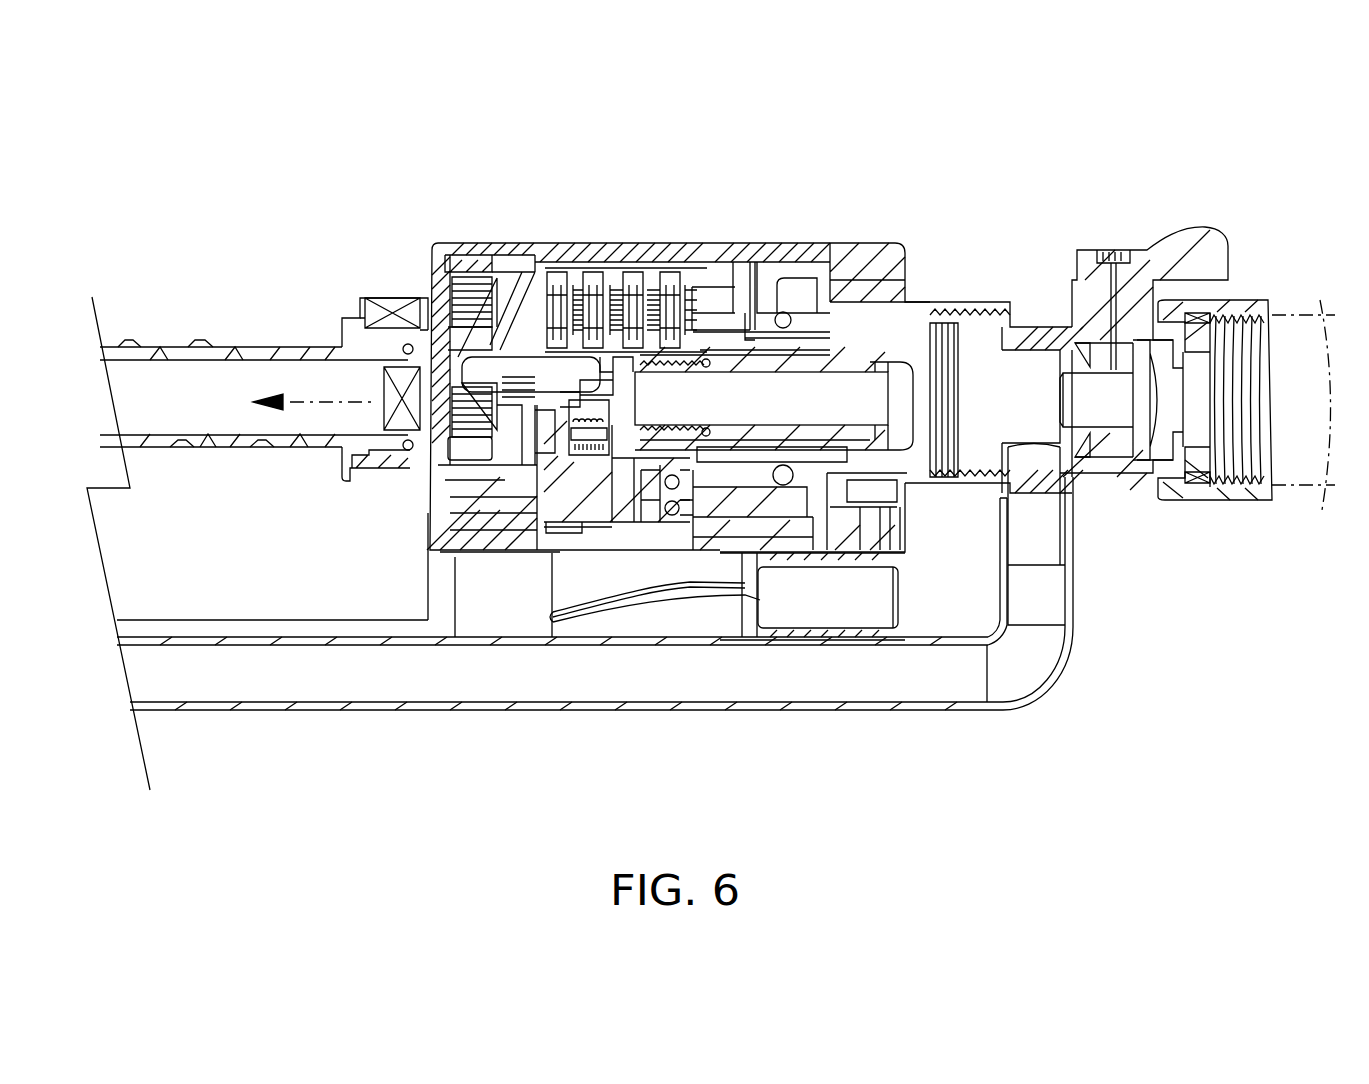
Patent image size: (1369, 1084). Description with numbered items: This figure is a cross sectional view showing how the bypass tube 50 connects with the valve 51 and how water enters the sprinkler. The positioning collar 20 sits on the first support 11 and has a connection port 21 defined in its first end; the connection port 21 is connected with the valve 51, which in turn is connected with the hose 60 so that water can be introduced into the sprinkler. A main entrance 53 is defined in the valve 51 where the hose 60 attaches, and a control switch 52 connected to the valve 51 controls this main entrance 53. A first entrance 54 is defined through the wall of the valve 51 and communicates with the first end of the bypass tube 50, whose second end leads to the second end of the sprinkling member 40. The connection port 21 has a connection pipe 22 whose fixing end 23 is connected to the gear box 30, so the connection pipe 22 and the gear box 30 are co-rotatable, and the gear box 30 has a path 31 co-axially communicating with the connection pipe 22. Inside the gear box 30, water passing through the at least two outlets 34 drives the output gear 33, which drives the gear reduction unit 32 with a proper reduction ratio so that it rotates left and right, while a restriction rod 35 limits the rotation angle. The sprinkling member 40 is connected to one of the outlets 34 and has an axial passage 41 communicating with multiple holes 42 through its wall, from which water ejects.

The first support 11 is at (777, 598).
The positioning collar 20 is at (773, 240).
The connection port 21 is at (938, 300).
The connection pipe 22 is at (822, 365).
The fixing end 23 is at (667, 458).
The gear box 30 is at (524, 238).
The path 31 is at (622, 412).
The gear reduction unit 32 is at (633, 278).
The output gear 33 is at (460, 395).
The outlets 34 is at (472, 460).
The restriction rod 35 is at (718, 493).
The sprinkling member 40 is at (291, 348).
The passage 41 is at (148, 383).
The holes 42 is at (201, 345).
The bypass tube 50 is at (921, 718).
The valve 51 is at (1028, 318).
The control switch 52 is at (1145, 263).
The main entrance 53 is at (1123, 407).
The first entrance 54 is at (1040, 518).
The hose 60 is at (1307, 340).